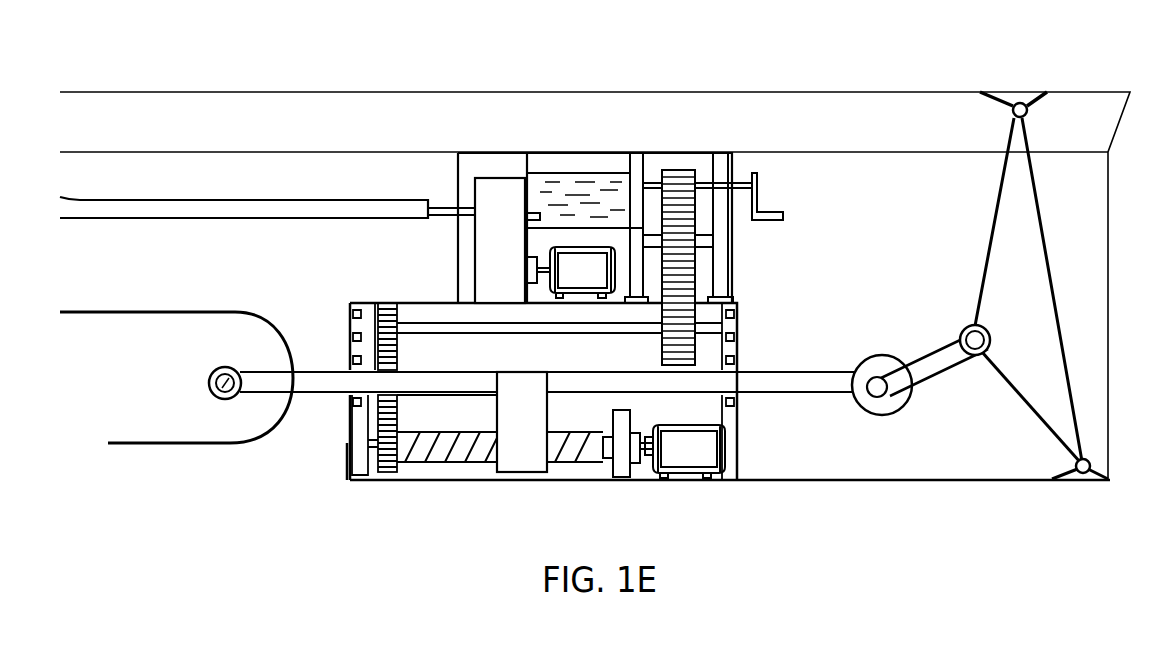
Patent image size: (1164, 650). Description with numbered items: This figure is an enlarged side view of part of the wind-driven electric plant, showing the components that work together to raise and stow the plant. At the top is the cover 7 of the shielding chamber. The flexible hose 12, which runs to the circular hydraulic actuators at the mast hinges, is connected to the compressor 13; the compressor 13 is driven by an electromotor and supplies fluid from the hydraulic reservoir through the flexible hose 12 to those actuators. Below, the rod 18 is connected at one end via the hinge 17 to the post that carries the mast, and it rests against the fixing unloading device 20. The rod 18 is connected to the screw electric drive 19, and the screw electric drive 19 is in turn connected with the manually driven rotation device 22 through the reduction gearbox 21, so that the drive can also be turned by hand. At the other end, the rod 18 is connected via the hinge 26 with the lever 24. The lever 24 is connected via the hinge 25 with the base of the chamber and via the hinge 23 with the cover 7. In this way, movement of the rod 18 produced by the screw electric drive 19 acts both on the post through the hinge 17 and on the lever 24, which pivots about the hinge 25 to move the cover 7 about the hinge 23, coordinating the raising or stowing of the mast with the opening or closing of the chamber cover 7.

The cover 7 is at (895, 92).
The flexible hose 12 is at (103, 200).
The compressor 13 is at (505, 230).
The hinge 17 is at (235, 363).
The rod 18 is at (757, 383).
The screw electric drive 19 is at (634, 418).
The fixing unloading device 20 is at (207, 485).
The reduction gearbox 21 is at (697, 226).
The manually driven rotation device 22 is at (755, 198).
The hinge 23 is at (1003, 95).
The lever 24 is at (905, 352).
The hinge 25 is at (1078, 466).
The hinge 26 is at (977, 332).